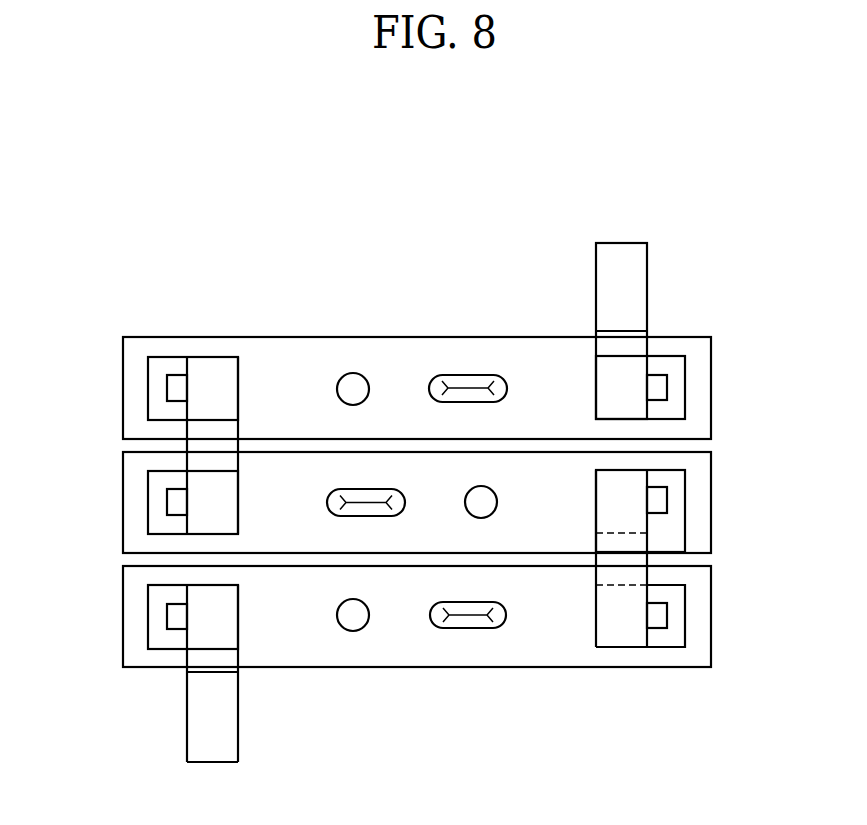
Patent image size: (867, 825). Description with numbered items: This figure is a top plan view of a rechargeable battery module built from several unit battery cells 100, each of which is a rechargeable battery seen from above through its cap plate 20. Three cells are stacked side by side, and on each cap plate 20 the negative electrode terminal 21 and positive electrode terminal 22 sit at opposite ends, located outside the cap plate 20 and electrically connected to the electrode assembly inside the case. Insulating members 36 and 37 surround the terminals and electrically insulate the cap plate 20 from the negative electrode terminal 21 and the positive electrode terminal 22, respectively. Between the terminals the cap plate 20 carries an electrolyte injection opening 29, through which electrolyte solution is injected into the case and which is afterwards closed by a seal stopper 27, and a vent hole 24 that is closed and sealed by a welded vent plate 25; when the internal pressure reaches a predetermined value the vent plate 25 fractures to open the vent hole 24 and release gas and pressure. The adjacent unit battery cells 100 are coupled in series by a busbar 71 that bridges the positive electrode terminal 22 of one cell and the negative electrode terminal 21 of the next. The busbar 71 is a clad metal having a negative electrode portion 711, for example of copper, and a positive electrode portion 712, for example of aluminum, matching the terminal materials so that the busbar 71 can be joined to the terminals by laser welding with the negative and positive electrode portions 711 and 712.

The unit battery cell 100 is at (112, 577).
The cap plate 20 is at (556, 646).
The negative electrode terminal 21 is at (658, 499).
The positive electrode terminal 22 is at (658, 614).
The vent hole 24 is at (461, 628).
The vent plate 25 is at (483, 622).
The seal stopper 27 is at (357, 612).
The electrolyte injection opening 29 is at (348, 630).
The insulating member 36 is at (157, 635).
The insulating member 37 is at (667, 638).
The busbar 71 is at (782, 528).
The negative electrode portion 711 is at (627, 519).
The positive electrode portion 712 is at (628, 595).